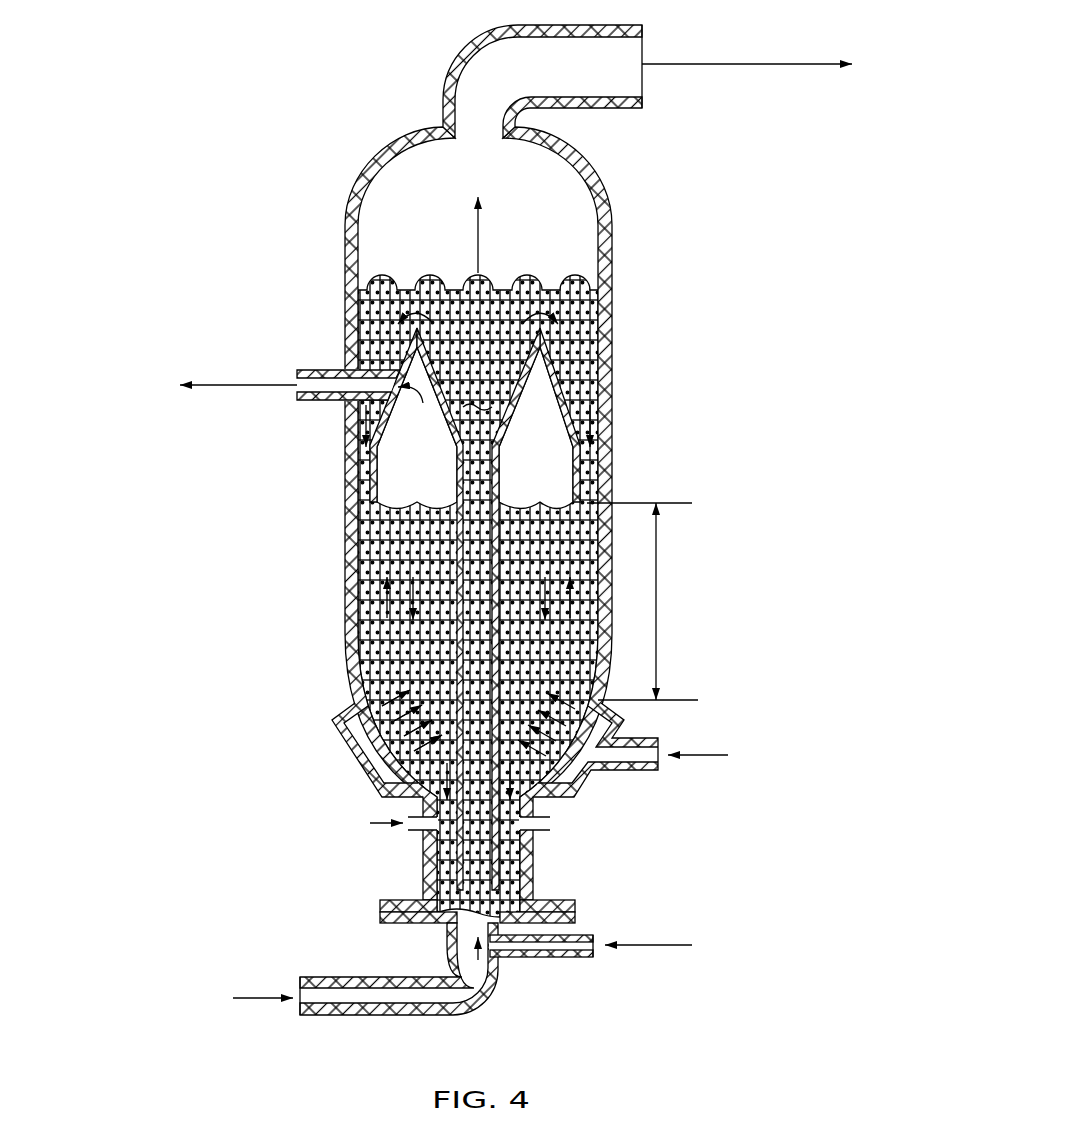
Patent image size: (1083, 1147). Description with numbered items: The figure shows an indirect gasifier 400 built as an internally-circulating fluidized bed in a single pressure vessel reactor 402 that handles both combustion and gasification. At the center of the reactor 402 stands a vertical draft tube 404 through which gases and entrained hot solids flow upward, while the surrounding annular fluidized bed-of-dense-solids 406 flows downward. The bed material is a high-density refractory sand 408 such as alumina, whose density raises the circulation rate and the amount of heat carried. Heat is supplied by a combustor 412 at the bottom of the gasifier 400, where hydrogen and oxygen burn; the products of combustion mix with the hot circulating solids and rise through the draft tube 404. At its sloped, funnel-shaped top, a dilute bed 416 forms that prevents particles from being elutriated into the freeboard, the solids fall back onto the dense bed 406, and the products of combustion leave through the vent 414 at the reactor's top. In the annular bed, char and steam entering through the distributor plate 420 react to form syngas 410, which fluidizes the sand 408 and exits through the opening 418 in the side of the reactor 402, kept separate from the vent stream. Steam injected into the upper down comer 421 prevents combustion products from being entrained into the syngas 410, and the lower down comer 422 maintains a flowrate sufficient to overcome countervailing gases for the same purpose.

The indirect gasifier 400 is at (250, 76).
The pressure vessel reactor 402 is at (612, 240).
The draft tube 404 is at (457, 853).
The fluidized bed-of-dense-solids 406 is at (840, 616).
The refractory sand 408 is at (92, 499).
The syngas 410 is at (202, 519).
The combustor 412 is at (477, 958).
The vent 414 is at (607, 110).
The dilute bed 416 is at (478, 480).
The opening 418 is at (317, 401).
The distributor plate 420 is at (643, 738).
The upper down comer 421 is at (597, 467).
The lower down comer 422 is at (533, 855).